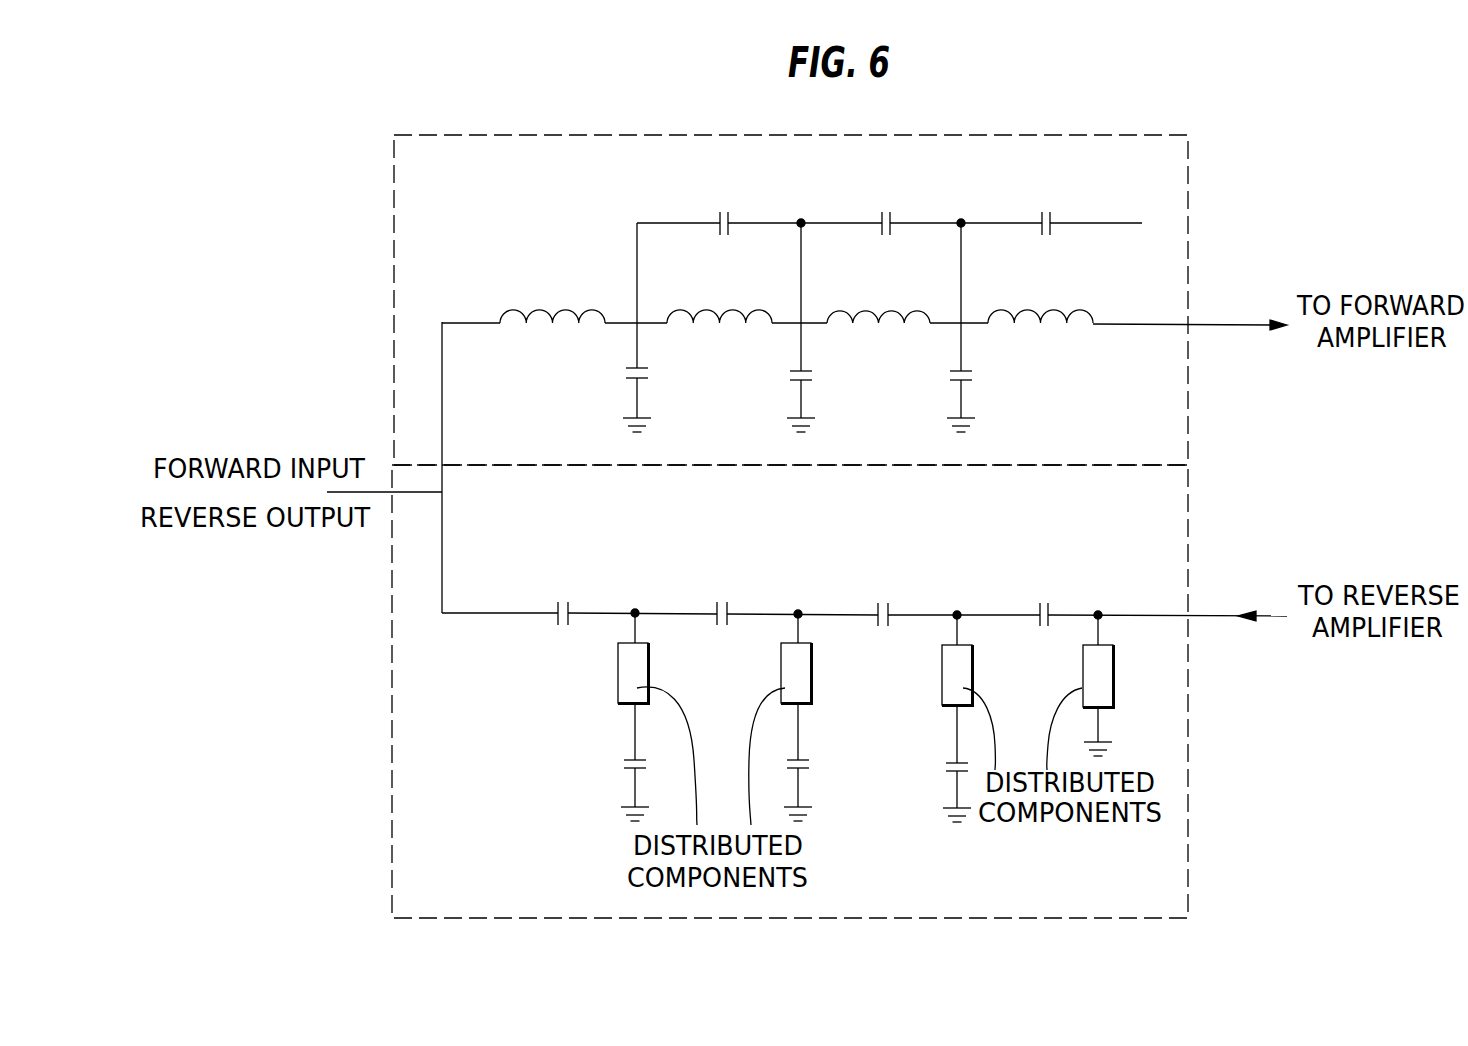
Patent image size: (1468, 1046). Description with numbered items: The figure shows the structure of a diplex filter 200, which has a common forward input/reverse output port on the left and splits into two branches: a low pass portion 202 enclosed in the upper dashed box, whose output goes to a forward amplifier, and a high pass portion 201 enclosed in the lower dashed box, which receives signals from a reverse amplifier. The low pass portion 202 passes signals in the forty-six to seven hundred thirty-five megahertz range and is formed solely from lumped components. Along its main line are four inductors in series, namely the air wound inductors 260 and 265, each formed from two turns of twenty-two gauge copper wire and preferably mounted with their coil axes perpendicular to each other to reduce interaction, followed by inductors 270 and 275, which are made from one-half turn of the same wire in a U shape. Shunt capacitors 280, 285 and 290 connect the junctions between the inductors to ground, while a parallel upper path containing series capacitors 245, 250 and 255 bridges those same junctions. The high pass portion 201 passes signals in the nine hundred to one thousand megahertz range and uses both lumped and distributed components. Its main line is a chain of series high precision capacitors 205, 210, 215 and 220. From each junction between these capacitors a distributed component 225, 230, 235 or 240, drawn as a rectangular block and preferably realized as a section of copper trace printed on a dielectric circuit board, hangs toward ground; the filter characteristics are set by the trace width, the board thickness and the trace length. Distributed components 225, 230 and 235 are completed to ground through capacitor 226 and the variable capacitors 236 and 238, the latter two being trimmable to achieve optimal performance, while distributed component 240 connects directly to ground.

The diplex filter 200 is at (360, 235).
The high pass portion 201 is at (1185, 748).
The low pass portion 202 is at (1063, 132).
The capacitor 205 is at (563, 602).
The capacitor 210 is at (722, 602).
The capacitor 215 is at (884, 603).
The capacitor 220 is at (1046, 603).
The distributed component 225 is at (648, 682).
The capacitor 226 is at (620, 763).
The distributed component 230 is at (811, 685).
The distributed component 235 is at (972, 676).
The variable capacitor 236 is at (838, 758).
The variable capacitor 238 is at (942, 767).
The distributed component 240 is at (1113, 690).
The capacitor 245 is at (727, 213).
The capacitor 250 is at (888, 212).
The capacitor 255 is at (1048, 212).
The air wound inductor 260 is at (540, 305).
The air wound inductor 265 is at (707, 305).
The inductor 270 is at (867, 305).
The inductor 275 is at (1028, 305).
The capacitor 280 is at (681, 367).
The capacitor 285 is at (843, 368).
The capacitor 290 is at (1003, 368).